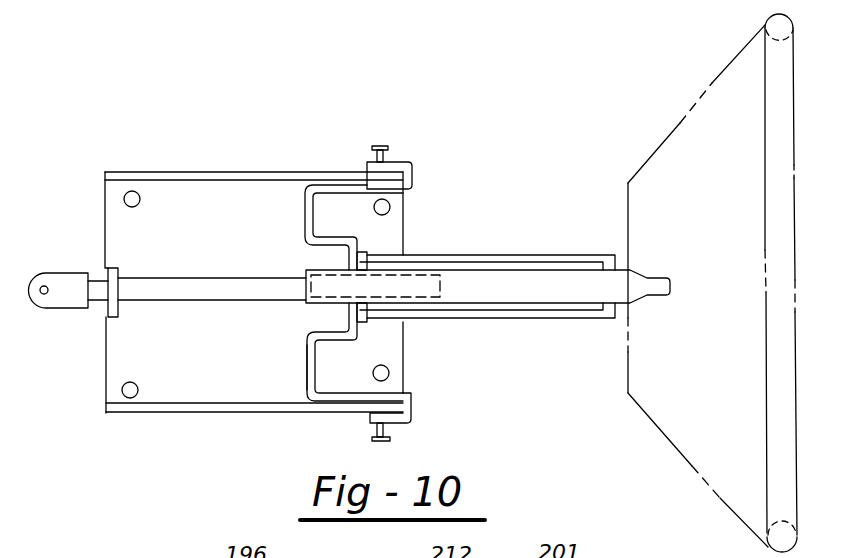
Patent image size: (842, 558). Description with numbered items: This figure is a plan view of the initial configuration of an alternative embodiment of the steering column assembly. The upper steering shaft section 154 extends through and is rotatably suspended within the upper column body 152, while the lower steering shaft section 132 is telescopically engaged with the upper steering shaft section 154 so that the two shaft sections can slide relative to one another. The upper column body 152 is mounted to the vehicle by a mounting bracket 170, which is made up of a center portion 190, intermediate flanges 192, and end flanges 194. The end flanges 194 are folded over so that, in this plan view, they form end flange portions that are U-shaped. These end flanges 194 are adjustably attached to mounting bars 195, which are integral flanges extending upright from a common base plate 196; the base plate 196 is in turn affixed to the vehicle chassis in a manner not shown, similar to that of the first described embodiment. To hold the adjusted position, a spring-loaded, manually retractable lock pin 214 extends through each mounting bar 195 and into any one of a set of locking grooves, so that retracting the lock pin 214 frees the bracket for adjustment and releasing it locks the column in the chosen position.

The lower steering shaft section 132 is at (172, 277).
The upper column body 152 is at (565, 255).
The upper steering shaft section 154 is at (483, 281).
The mounting bracket 170 is at (298, 219).
The center portion 190 is at (342, 311).
The intermediate flanges 192 is at (299, 382).
The end flanges 194 is at (415, 408).
The mounting bars 195 is at (128, 418).
The base plate 196 is at (246, 256).
The lock pin 214 is at (386, 156).